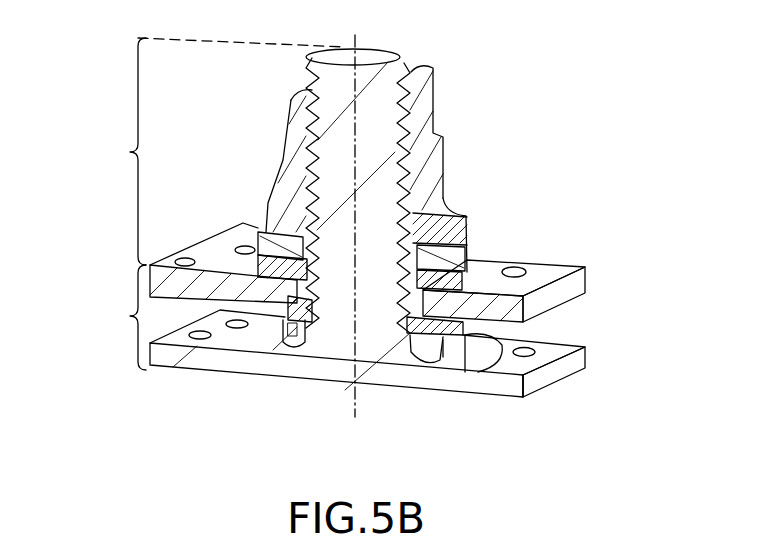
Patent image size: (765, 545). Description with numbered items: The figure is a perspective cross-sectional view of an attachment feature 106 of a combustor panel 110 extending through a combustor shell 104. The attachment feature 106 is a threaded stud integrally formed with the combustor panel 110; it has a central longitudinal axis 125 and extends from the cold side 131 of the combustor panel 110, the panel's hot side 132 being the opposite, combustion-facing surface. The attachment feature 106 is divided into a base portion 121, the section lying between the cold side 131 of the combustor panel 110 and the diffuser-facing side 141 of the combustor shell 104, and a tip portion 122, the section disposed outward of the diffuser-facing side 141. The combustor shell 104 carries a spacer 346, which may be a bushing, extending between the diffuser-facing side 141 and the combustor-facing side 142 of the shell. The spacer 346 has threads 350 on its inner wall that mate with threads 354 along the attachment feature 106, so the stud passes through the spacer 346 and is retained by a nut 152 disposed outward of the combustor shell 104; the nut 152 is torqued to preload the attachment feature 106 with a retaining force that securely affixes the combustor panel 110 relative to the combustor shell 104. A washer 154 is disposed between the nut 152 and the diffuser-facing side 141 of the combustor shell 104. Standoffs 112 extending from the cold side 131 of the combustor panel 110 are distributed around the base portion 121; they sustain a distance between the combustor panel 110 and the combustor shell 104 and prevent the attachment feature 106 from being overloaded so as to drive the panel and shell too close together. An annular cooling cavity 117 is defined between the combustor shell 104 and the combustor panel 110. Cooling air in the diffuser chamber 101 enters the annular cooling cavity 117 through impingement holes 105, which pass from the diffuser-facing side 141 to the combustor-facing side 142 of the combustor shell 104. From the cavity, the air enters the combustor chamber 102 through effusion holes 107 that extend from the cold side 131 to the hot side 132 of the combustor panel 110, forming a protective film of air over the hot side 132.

The diffuser chamber 101 is at (226, 168).
The combustor chamber 102 is at (259, 458).
The combustor shell 104 is at (404, 262).
The impingement holes 105 is at (243, 250).
The attachment feature 106 is at (408, 72).
The effusion holes 107 is at (236, 332).
The combustor panel 110 is at (404, 371).
The standoffs 112 is at (456, 352).
The annular cooling cavity 117 is at (522, 372).
The base portion 121 is at (112, 317).
The tip portion 122 is at (112, 151).
The central longitudinal axis 125 is at (353, 410).
The cold side 131 is at (560, 346).
The hot side 132 is at (553, 384).
The diffuser-facing side 141 is at (558, 265).
The combustor-facing side 142 is at (588, 300).
The nut 152 is at (300, 148).
The washer 154 is at (470, 178).
The spacer 346 is at (298, 348).
The threads 350 is at (408, 338).
The threads 354 is at (457, 208).